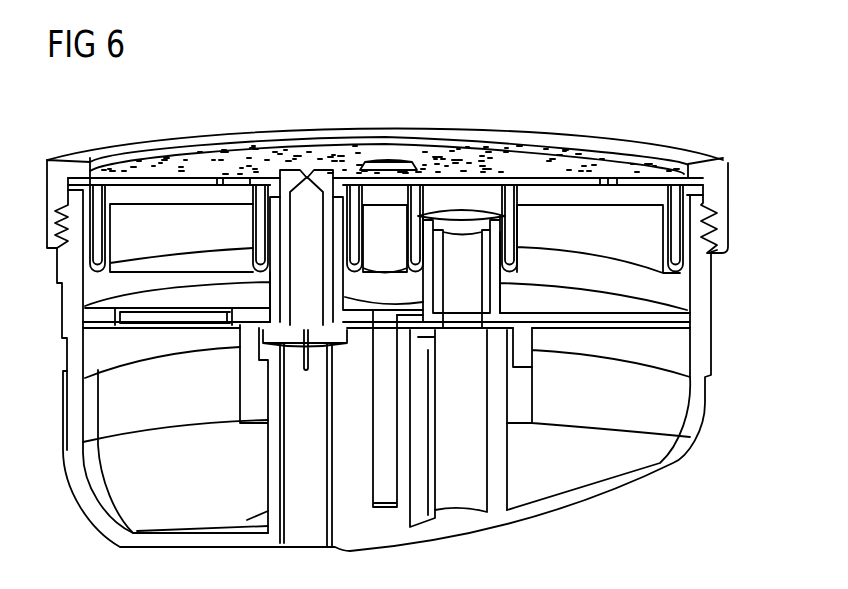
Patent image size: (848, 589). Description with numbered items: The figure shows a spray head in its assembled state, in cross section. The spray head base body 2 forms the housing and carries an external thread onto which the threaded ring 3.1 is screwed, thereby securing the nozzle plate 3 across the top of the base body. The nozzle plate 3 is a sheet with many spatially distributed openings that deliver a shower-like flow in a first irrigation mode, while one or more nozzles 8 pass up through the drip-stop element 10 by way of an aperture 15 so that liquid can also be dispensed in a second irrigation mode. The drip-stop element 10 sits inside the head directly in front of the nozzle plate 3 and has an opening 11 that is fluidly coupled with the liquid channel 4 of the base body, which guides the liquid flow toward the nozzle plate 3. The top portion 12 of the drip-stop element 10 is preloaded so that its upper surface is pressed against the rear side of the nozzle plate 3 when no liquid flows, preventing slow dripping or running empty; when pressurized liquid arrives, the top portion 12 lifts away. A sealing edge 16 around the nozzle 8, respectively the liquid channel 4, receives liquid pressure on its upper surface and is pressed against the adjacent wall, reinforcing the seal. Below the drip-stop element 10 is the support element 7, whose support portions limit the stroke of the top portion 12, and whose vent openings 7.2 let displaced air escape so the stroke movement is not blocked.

The spray head base body 2 is at (632, 500).
The nozzle plate 3 is at (442, 152).
The threaded ring 3.1 is at (720, 186).
The liquid channel 4 is at (463, 485).
The support element 7 is at (602, 330).
The vent openings 7.2 is at (225, 311).
The nozzle 8 is at (306, 160).
The drip-stop element 10 is at (622, 172).
The opening 11 is at (478, 197).
The top portion 12 is at (157, 192).
The aperture 15 is at (270, 165).
The sealing edge 16 is at (340, 190).